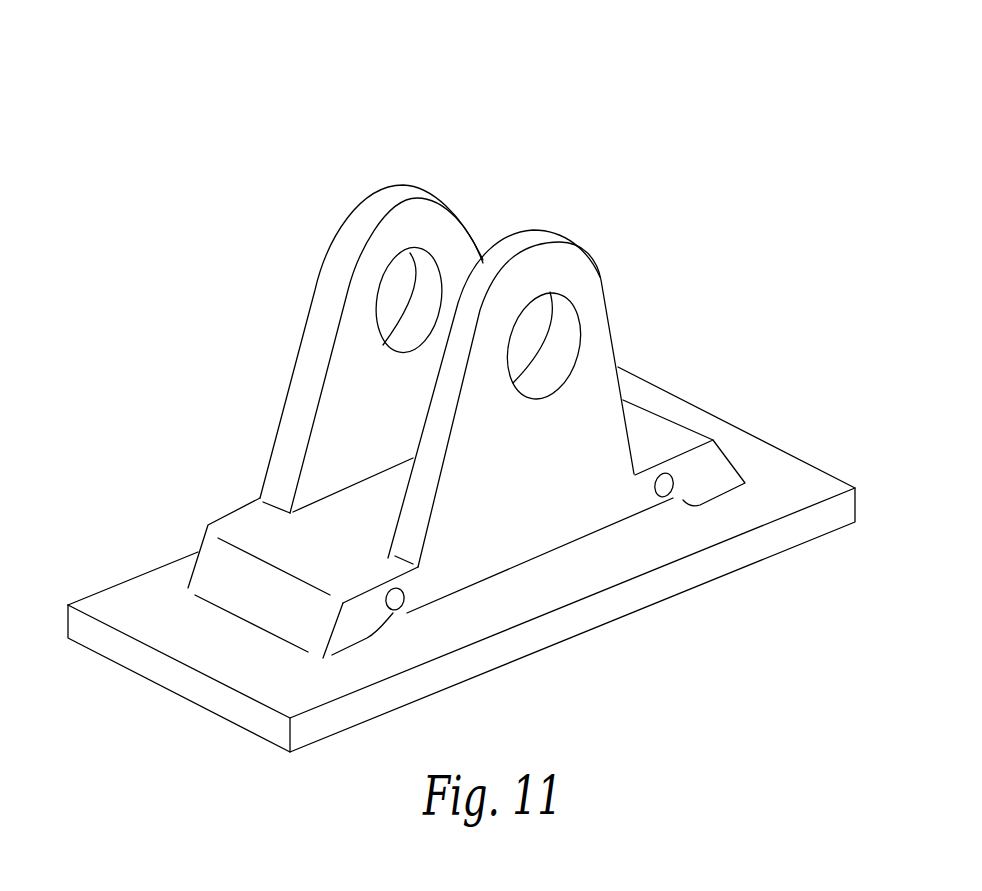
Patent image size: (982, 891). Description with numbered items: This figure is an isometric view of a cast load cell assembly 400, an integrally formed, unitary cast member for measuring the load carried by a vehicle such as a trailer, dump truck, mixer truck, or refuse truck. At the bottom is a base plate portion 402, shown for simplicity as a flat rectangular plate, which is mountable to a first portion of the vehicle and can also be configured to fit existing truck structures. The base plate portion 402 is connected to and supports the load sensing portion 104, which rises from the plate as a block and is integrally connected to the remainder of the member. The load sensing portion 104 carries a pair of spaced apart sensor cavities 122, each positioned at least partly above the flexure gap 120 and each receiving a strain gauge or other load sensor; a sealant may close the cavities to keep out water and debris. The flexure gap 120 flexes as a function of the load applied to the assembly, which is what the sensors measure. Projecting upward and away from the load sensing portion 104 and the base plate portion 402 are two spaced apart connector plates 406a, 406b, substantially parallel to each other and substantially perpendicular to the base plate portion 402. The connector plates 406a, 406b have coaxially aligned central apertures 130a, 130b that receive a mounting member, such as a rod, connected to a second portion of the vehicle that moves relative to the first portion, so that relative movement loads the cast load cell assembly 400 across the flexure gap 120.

The cast load cell assembly 400 is at (275, 110).
The load sensing portion 104 is at (142, 597).
The flexure gap 120 is at (548, 575).
The base plate portion 402 is at (222, 676).
The sensor cavity 122 is at (403, 611).
The connector plate 406a is at (428, 210).
The connector plate 406b is at (577, 265).
The central aperture 130a is at (432, 287).
The central aperture 130b is at (557, 362).